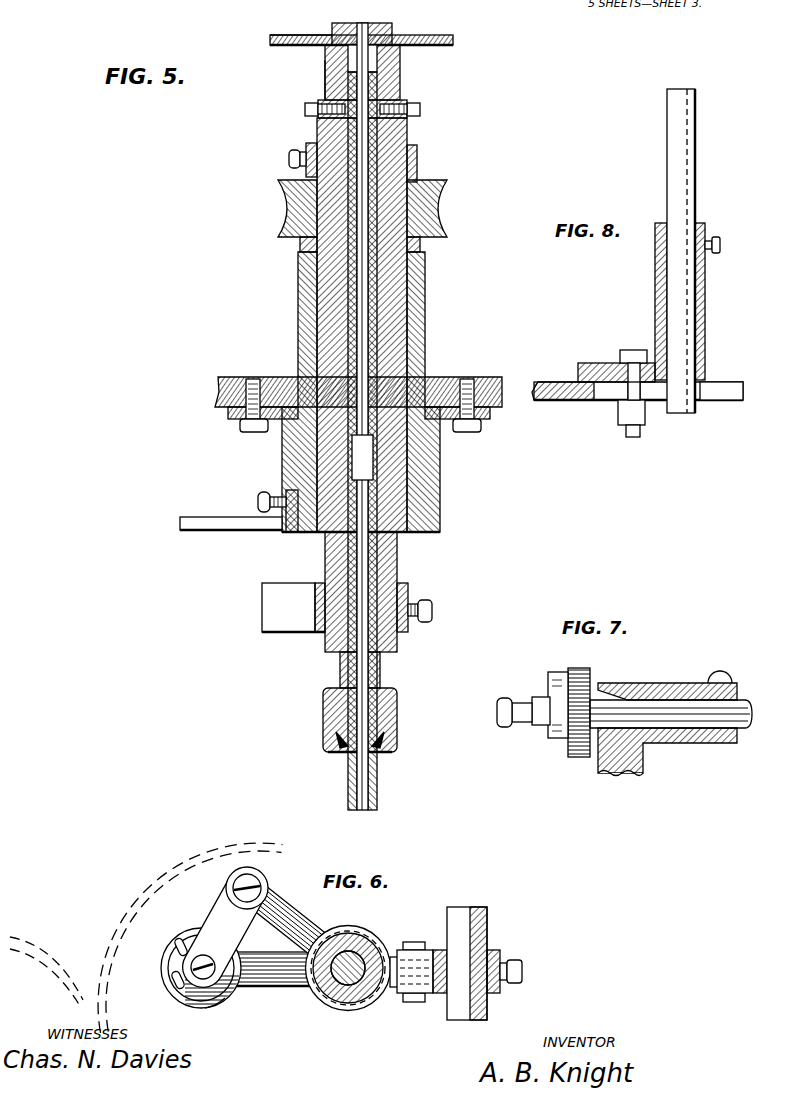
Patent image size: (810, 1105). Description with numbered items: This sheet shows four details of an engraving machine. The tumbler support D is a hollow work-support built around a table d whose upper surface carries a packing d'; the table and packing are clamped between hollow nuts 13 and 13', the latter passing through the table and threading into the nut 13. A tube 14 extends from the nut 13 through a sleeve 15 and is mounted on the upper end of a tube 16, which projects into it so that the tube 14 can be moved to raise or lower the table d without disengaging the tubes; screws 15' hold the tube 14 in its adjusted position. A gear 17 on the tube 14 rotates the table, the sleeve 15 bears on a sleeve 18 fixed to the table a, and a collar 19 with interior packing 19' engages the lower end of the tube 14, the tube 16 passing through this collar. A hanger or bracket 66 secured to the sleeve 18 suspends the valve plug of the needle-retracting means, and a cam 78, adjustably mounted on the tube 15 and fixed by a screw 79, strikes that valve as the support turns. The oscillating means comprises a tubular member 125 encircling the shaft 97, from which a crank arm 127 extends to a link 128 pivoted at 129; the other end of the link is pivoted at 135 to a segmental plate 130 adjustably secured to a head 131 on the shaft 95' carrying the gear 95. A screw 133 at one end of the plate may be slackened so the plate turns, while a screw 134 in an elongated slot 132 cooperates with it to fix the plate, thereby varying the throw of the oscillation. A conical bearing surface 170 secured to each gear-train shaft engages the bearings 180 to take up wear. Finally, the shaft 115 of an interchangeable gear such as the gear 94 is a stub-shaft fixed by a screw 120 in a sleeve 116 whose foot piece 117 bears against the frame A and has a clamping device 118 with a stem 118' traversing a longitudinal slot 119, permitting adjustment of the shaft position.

In FIG. 5, the table a is at (276, 377).
In FIG. 5, the table d is at (383, 47).
In FIG. 5, the packing d' is at (276, 31).
In FIG. 5, the support D is at (291, 80).
In FIG. 5, the hollow nut 13 is at (333, 73).
In FIG. 5, the hollow nut 13' is at (339, 26).
In FIG. 5, the tube 14 is at (368, 137).
In FIG. 5, the sleeve 15 is at (389, 403).
In FIG. 5, the screws 15' is at (399, 103).
In FIG. 5, the tube 16 is at (368, 672).
In FIG. 5, the gear 17 is at (438, 203).
In FIG. 5, the sleeve 18 is at (428, 318).
In FIG. 5, the collar 19 is at (390, 720).
In FIG. 5, the packing 19' is at (322, 742).
In FIG. 5, the hanger or bracket 66 is at (200, 516).
In FIG. 5, the cam 78 is at (268, 598).
In FIG. 5, the screw 79 is at (433, 611).
In FIG. 8, the frame A is at (546, 382).
In FIG. 8, the shaft 115 is at (668, 158).
In FIG. 8, the sleeve 116 is at (655, 289).
In FIG. 8, the foot piece 117 is at (590, 366).
In FIG. 8, the clamping device 118 is at (627, 366).
In FIG. 8, the stem 118' is at (595, 424).
In FIG. 8, the longitudinal slot 119 is at (718, 394).
In FIG. 8, the screw 120 is at (716, 252).
In FIG. 7, the shaft 95' is at (671, 687).
In FIG. 7, the conical bearing surface 170 is at (623, 684).
In FIG. 7, the bearings 180 is at (695, 734).
In FIG. 7, the head 131 is at (577, 759).
In FIG. 6, the head 131 is at (235, 1003).
In FIG. 7, the segmental plate 130 is at (558, 737).
In FIG. 6, the segmental plate 130 is at (197, 1002).
In FIG. 7, the screw 133 is at (533, 727).
In FIG. 6, the screw 133 is at (247, 980).
In FIG. 7, the pivot or crank pin 135 is at (507, 698).
In FIG. 6, the pivot or crank pin 135 is at (207, 980).
In FIG. 6, the gear 95 is at (174, 938).
In FIG. 6, the gear 94 is at (37, 948).
In FIG. 6, the shaft 97 is at (388, 937).
In FIG. 6, the tubular member 125 is at (358, 1000).
In FIG. 6, the crank arm 127 is at (290, 898).
In FIG. 6, the link 128 is at (220, 918).
In FIG. 6, the pivot 129 is at (248, 867).
In FIG. 6, the elongated slot 132 is at (178, 950).
In FIG. 6, the screw 134 is at (172, 967).